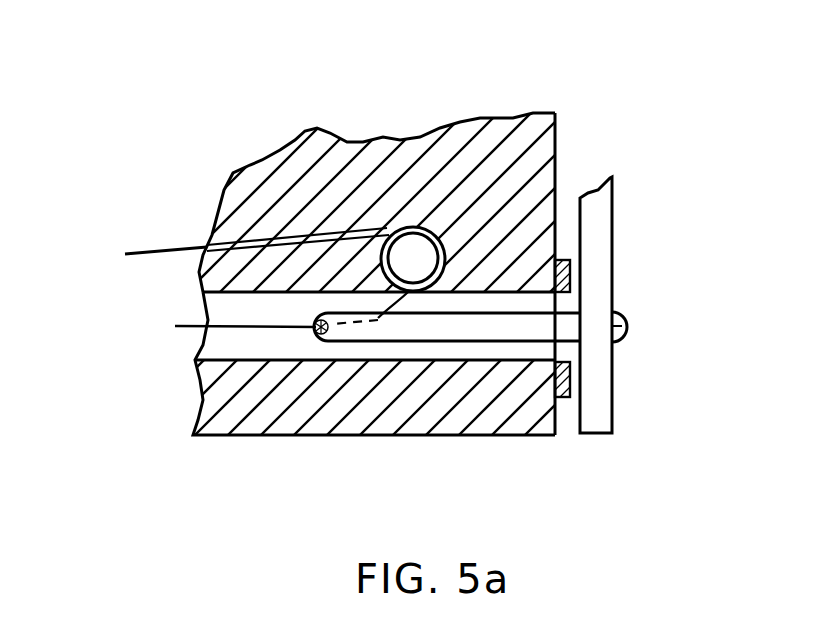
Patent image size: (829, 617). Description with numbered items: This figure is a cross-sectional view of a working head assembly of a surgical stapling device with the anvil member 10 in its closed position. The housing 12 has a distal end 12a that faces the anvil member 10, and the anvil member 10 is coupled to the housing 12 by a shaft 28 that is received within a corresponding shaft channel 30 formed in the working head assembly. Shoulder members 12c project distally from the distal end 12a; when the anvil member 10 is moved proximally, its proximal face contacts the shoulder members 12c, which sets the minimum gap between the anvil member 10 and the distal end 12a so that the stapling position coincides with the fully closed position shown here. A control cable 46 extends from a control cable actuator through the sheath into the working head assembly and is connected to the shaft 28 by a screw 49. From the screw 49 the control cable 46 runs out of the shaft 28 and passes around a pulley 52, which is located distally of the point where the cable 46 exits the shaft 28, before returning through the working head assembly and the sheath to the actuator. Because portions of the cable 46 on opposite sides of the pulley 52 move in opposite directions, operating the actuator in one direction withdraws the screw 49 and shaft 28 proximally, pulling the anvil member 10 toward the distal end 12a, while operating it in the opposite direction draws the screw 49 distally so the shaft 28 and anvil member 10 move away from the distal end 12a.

The anvil member 10 is at (595, 402).
The housing 12 is at (500, 152).
The distal end 12a is at (558, 137).
The shoulder members 12c is at (568, 268).
The shaft 28 is at (455, 330).
The shaft channel 30 is at (403, 352).
The control cable 46 is at (183, 246).
The screw 49 is at (316, 335).
The pulley 52 is at (390, 230).